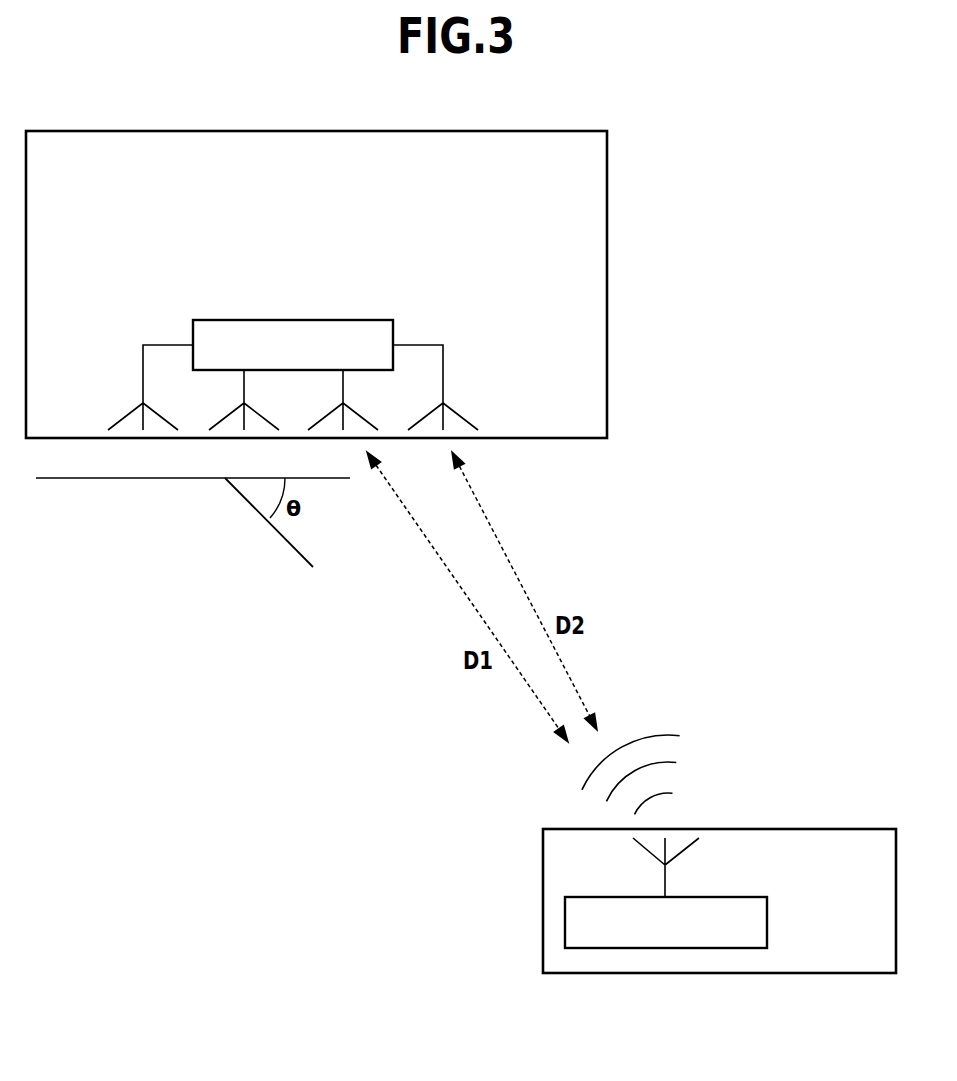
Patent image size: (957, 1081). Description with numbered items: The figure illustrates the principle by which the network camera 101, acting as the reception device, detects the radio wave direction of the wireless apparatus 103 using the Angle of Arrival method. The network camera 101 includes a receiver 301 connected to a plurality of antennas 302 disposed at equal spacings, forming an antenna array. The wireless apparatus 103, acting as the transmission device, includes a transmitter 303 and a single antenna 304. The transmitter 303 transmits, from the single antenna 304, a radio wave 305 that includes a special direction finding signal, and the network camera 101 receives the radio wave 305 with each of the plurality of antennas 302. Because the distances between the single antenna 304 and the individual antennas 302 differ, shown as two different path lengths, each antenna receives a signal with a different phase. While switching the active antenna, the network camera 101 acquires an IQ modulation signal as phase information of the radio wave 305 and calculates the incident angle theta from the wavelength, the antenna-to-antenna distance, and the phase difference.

The network camera 101 is at (607, 200).
The wireless apparatus 103 is at (818, 829).
The receiver 301 is at (302, 320).
The plurality of antennas 302 is at (443, 365).
The transmitter 303 is at (735, 897).
The single antenna 304 is at (650, 851).
The radio wave 305 is at (648, 734).